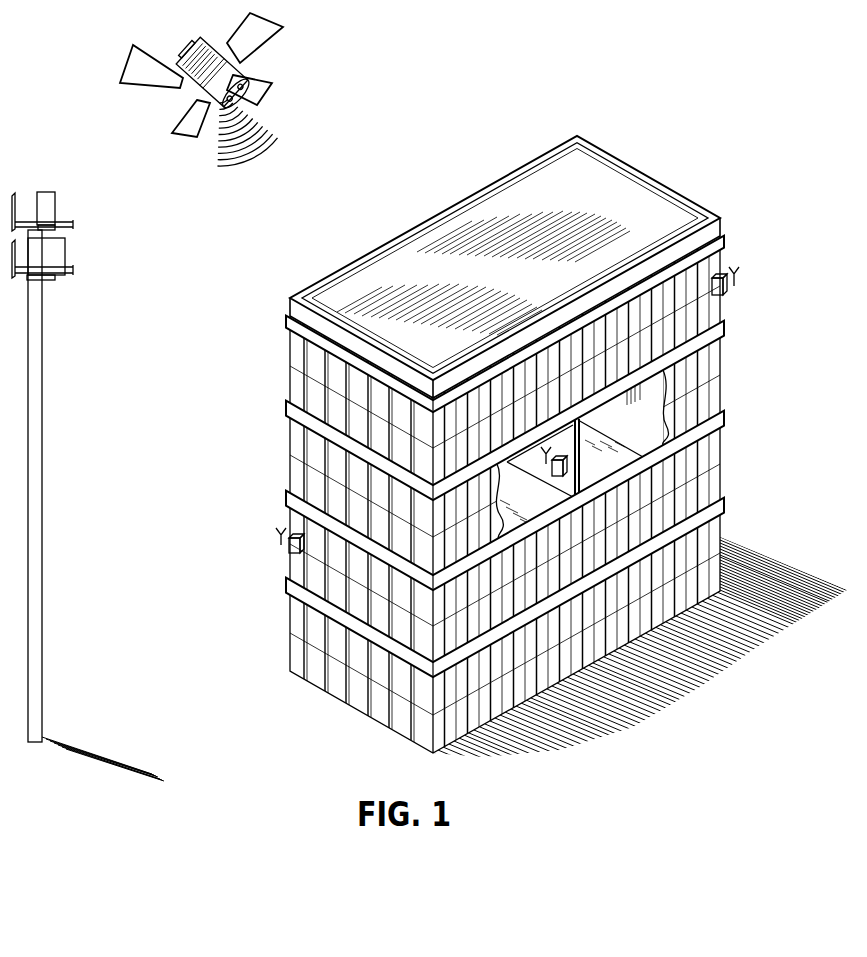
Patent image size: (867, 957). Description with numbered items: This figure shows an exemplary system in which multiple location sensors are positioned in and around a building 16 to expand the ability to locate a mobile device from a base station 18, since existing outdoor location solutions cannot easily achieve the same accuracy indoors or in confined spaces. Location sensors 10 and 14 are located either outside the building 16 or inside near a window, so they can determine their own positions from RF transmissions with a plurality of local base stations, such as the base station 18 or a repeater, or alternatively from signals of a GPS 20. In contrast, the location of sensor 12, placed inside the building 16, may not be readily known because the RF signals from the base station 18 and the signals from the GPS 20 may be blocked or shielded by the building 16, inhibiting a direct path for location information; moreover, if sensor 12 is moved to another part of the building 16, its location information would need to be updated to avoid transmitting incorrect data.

The location sensor 10 is at (288, 551).
The location sensor 12 is at (561, 452).
The location sensor 14 is at (726, 291).
The building 16 is at (661, 167).
The base station 18 is at (82, 198).
The GPS 20 is at (276, 62).